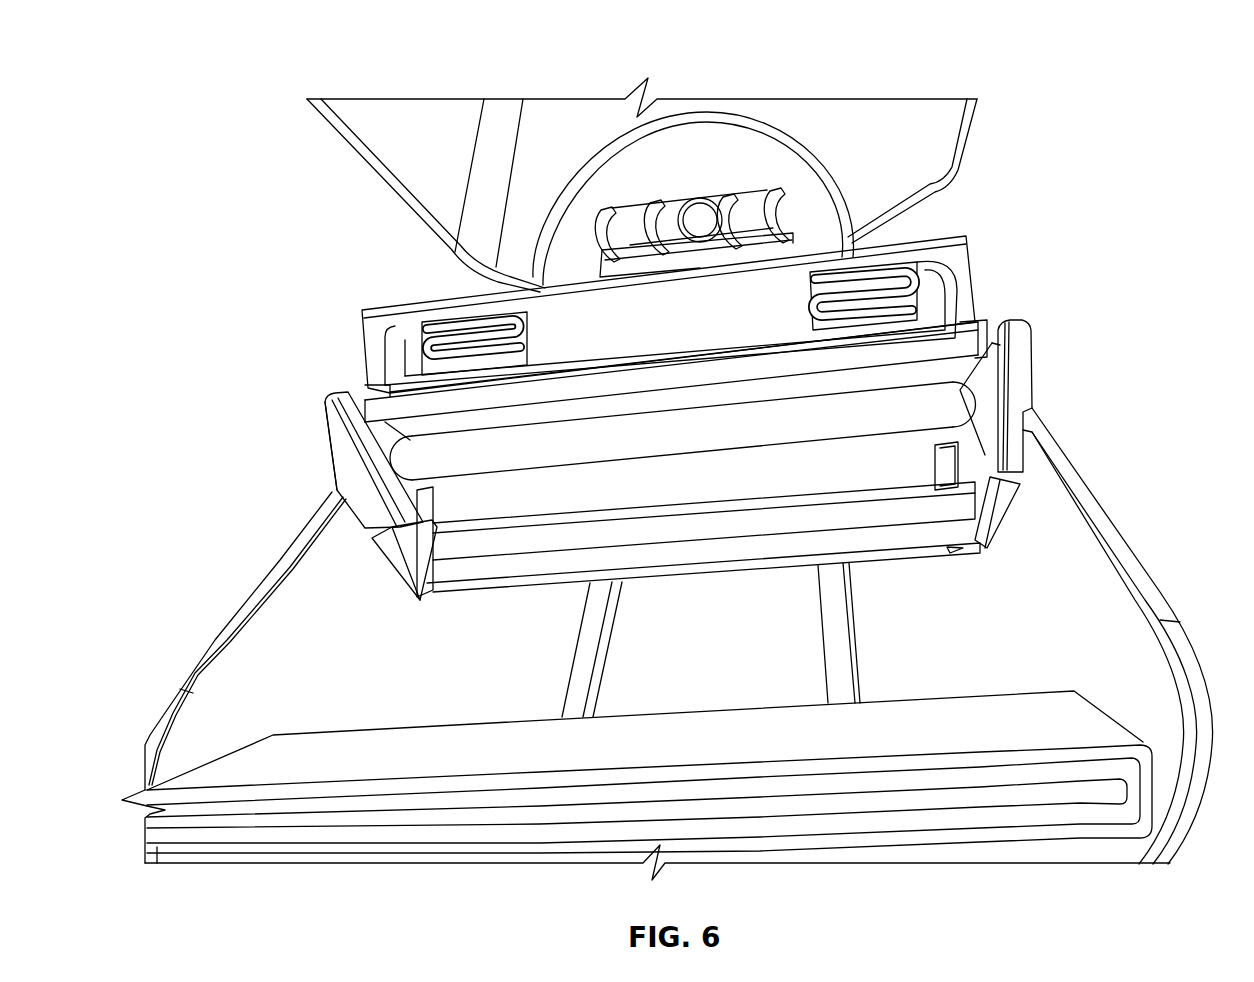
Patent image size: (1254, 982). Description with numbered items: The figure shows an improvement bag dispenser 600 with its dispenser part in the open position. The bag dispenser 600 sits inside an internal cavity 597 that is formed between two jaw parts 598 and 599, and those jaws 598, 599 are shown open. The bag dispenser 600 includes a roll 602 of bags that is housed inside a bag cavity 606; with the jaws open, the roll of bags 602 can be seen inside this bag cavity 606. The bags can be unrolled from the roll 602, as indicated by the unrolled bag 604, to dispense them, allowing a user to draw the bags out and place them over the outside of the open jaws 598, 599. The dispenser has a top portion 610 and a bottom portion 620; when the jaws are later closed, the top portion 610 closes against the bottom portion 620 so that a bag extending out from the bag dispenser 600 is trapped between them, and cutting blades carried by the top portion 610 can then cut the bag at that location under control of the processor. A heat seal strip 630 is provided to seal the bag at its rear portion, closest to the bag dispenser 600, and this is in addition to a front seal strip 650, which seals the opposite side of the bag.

The internal cavity 597 is at (305, 622).
The jaw part 598 is at (221, 726).
The jaw part 599 is at (412, 123).
The bag dispenser 600 is at (673, 423).
The roll of bags 602 is at (493, 453).
The unrolled bag 604 is at (492, 585).
The bag cavity 606 is at (980, 415).
The top portion 610 is at (778, 318).
The bottom portion 620 is at (946, 500).
The heat seal strip 630 is at (578, 533).
The front seal strip 650 is at (938, 798).